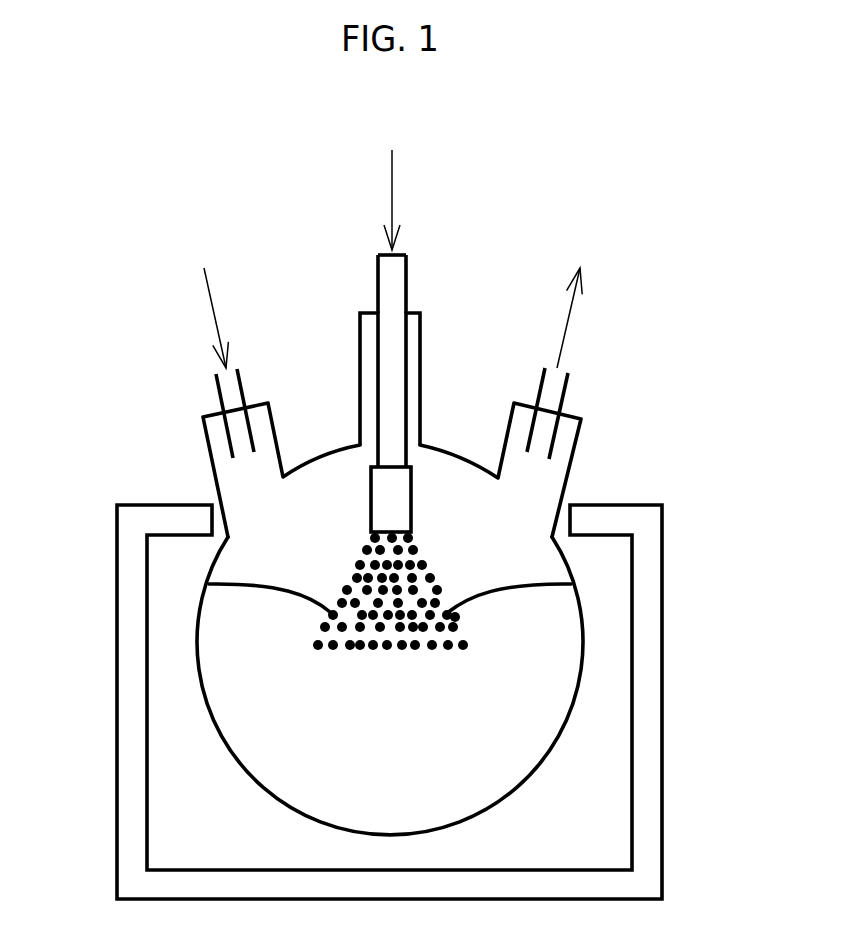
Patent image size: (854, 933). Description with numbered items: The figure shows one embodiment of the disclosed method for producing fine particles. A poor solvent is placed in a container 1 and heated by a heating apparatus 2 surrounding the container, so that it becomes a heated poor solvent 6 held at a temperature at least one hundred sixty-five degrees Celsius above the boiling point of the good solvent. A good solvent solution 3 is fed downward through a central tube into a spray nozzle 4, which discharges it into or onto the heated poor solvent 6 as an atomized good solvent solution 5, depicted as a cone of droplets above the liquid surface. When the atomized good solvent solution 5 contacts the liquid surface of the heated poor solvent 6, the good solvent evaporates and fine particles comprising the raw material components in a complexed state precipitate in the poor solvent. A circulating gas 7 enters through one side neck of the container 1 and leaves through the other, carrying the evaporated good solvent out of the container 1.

The container 1 is at (200, 602).
The heating apparatus 2 is at (117, 663).
The good solvent solution 3 is at (392, 178).
The spray nozzle 4 is at (388, 505).
The atomized good solvent solution 5 is at (427, 570).
The heated poor solvent 6 is at (543, 655).
The circulating gas 7 is at (210, 306).